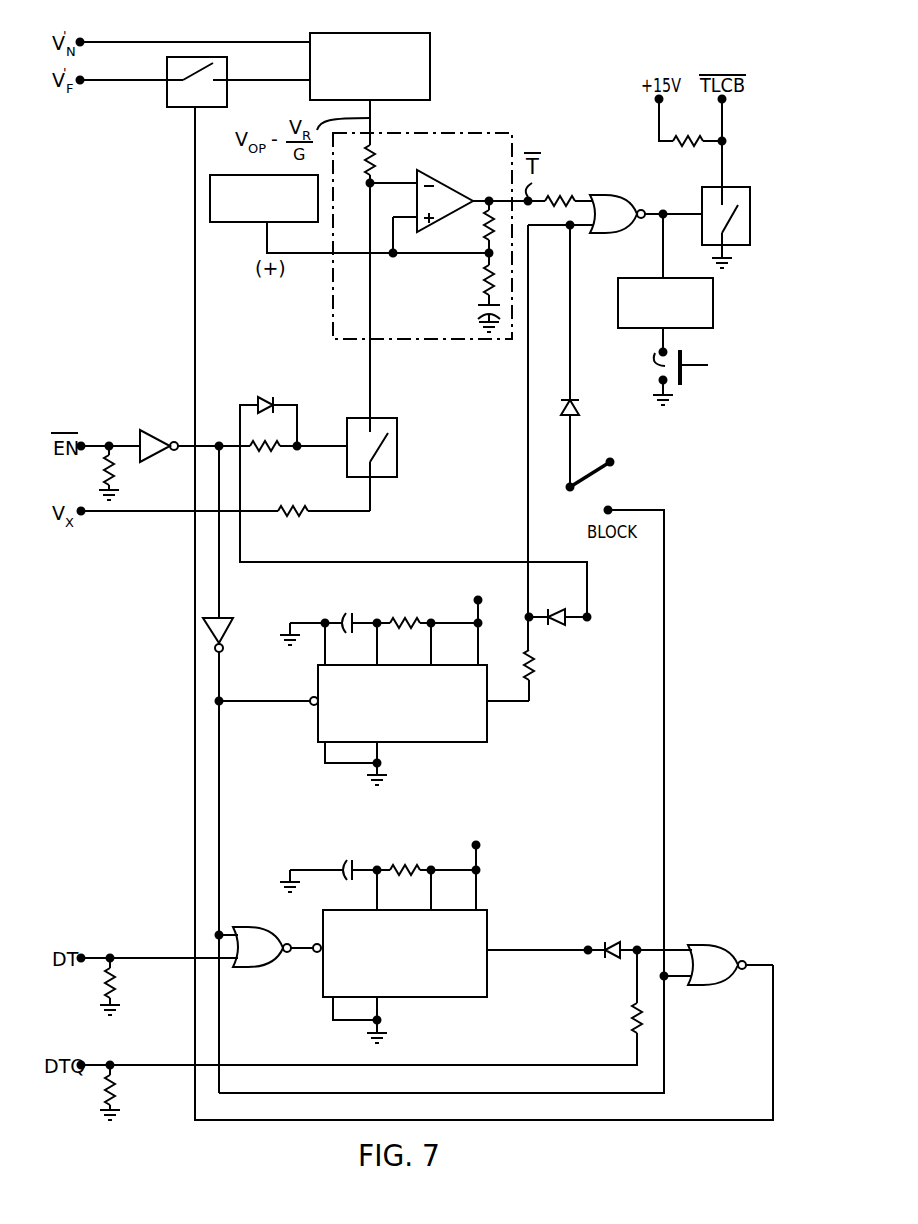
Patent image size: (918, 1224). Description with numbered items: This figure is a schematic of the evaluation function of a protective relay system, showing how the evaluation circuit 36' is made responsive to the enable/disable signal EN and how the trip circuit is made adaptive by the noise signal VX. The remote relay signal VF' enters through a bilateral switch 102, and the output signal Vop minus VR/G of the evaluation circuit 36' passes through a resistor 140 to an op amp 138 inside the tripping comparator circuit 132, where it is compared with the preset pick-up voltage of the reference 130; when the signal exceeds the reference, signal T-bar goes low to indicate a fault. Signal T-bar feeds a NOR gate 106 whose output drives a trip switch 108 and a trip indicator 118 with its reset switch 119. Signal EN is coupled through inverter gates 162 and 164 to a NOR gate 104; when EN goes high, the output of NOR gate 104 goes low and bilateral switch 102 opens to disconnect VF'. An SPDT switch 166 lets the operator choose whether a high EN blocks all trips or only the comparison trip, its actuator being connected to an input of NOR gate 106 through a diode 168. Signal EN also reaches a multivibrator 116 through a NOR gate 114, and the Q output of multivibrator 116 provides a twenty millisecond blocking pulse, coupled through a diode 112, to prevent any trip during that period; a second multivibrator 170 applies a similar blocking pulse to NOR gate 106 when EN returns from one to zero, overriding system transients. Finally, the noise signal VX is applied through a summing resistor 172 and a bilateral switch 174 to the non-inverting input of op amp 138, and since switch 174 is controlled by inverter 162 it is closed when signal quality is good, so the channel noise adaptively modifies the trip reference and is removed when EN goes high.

The evaluation circuit 36' is at (394, 66).
The bilateral switch 102 is at (167, 100).
The NOR gate 104 is at (703, 945).
The NOR gate 106 is at (598, 196).
The trip switch 108 is at (732, 186).
The diode 112 is at (607, 941).
The NOR gate 114 is at (267, 927).
The multivibrator 116 is at (470, 998).
The trip indicator 118 is at (648, 278).
The reset switch 119 is at (655, 355).
The reference 130 is at (242, 176).
The tripping comparator circuit 132 is at (512, 131).
The op amp 138 is at (447, 186).
The resistor 140 is at (376, 158).
The inverter gate 162 is at (171, 422).
The inverter gate 164 is at (233, 632).
The SPDT switch 166 is at (604, 479).
The diode 168 is at (583, 405).
The multivibrator 170 is at (470, 743).
The summing resistor 172 is at (289, 512).
The bilateral switch 174 is at (398, 436).